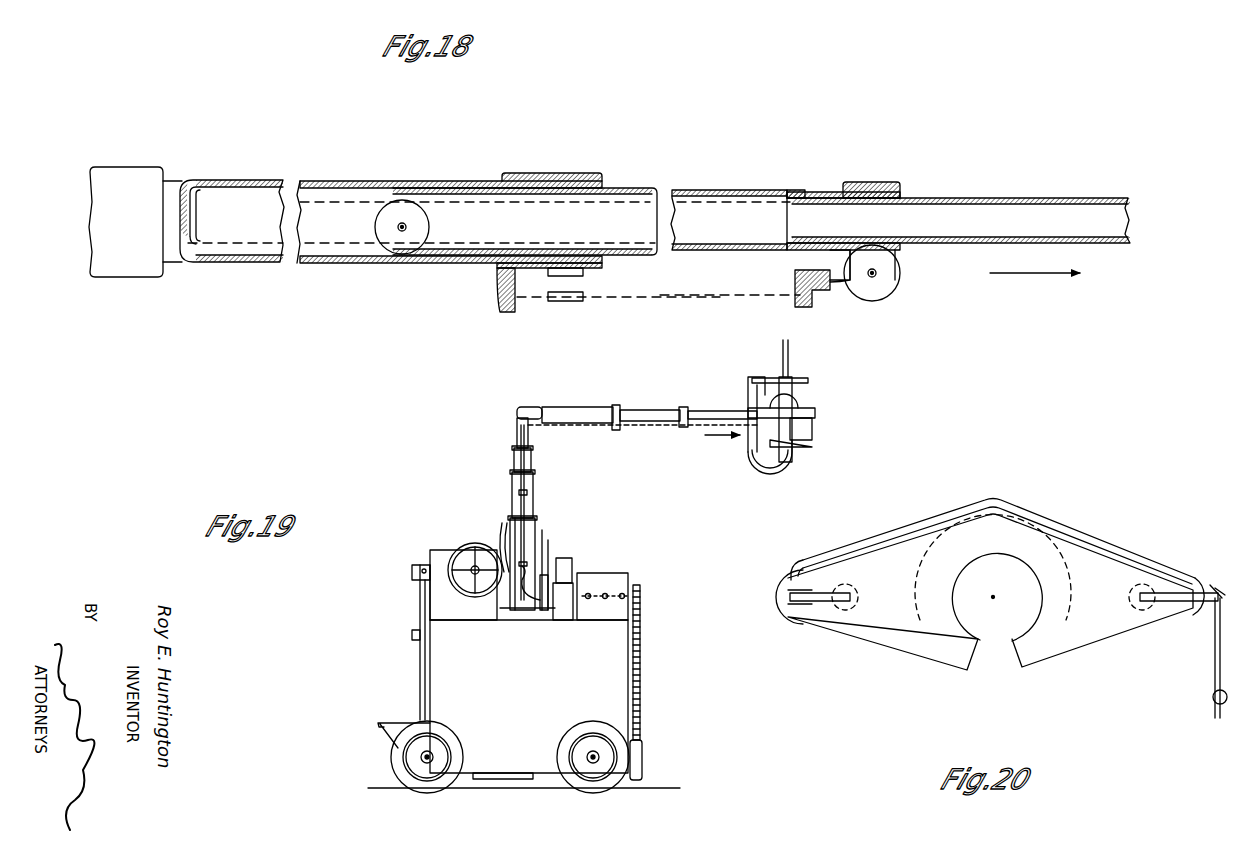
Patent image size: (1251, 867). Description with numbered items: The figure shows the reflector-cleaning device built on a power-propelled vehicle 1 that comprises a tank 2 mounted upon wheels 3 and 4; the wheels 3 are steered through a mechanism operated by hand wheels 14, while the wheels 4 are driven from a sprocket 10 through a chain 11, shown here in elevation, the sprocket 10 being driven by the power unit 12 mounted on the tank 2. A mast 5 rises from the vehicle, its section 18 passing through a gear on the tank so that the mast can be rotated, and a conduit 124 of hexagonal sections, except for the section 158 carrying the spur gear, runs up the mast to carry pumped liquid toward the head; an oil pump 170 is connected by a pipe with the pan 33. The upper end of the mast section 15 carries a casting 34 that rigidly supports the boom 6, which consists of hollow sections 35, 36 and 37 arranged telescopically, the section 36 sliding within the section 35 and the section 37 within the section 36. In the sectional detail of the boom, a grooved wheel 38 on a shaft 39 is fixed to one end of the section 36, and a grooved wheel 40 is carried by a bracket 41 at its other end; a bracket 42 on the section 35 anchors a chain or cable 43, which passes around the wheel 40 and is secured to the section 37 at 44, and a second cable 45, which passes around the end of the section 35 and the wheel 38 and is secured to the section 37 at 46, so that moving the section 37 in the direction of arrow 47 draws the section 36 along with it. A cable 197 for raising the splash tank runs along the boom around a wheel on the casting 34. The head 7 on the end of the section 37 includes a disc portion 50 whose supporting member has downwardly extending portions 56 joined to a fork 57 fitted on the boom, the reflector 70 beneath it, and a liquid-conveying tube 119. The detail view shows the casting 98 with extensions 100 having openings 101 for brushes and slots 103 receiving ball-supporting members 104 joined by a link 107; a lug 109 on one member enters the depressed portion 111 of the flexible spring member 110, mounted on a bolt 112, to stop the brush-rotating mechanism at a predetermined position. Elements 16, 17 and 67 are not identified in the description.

In FIG. 19, the power-propelled vehicle 1 is at (645, 690).
In FIG. 19, the tank 2 is at (630, 652).
In FIG. 19, the wheels 3 is at (392, 760).
In FIG. 19, the wheels 4 is at (625, 760).
In FIG. 19, the mast 5 is at (537, 487).
In FIG. 18, the boom 6 is at (628, 181).
In FIG. 19, the boom 6 is at (662, 408).
In FIG. 19, the head 7 is at (815, 427).
In FIG. 19, the sprocket 10 is at (642, 590).
In FIG. 19, the chain 11 is at (642, 630).
In FIG. 19, the power unit 12 is at (563, 605).
In FIG. 19, the hand wheels 14 is at (448, 583).
In FIG. 19, the mast section 15 is at (516, 433).
In FIG. 19, the intermediate mast section 16 is at (513, 461).
In FIG. 19, the lower mast section 17 is at (511, 497).
In FIG. 19, the mast section 18 is at (512, 548).
In FIG. 19, the pan 33 is at (501, 780).
In FIG. 18, the casting 34 is at (122, 167).
In FIG. 19, the casting 34 is at (517, 412).
In FIG. 18, the boom section 35 is at (345, 181).
In FIG. 19, the boom section 35 is at (573, 407).
In FIG. 18, the boom section 36 is at (730, 190).
In FIG. 19, the boom section 36 is at (640, 410).
In FIG. 18, the boom section 37 is at (1035, 198).
In FIG. 19, the boom section 37 is at (710, 411).
In FIG. 18, the grooved wheel 38 is at (402, 254).
In FIG. 18, the shaft 39 is at (398, 227).
In FIG. 18, the grooved wheel 40 is at (875, 301).
In FIG. 18, the bracket 41 is at (795, 280).
In FIG. 19, the bracket 41 is at (682, 427).
In FIG. 18, the bracket 42 is at (507, 312).
In FIG. 19, the bracket 42 is at (614, 430).
In FIG. 18, the chain or cable 43 is at (633, 300).
In FIG. 18, the connection means 44 is at (800, 240).
In FIG. 18, the second cable or chain 45 is at (603, 200).
In FIG. 18, the connection point 46 is at (790, 205).
In FIG. 18, the arrow 47 is at (1035, 273).
In FIG. 19, the arrow 47 is at (723, 437).
In FIG. 19, the disc portion 50 is at (800, 380).
In FIG. 19, the downwardly extending portions 56 is at (795, 450).
In FIG. 19, the fork 57 is at (800, 413).
In FIG. 19, the vertical rod 67 is at (780, 357).
In FIG. 19, the reflector 70 is at (790, 404).
In FIG. 20, the casting 98 is at (1092, 610).
In FIG. 20, the extensions 100 is at (1120, 578).
In FIG. 19, the openings 101 is at (606, 576).
In FIG. 20, the slots 103 is at (808, 603).
In FIG. 20, the ball-supporting members 104 is at (1170, 605).
In FIG. 20, the link 107 is at (950, 503).
In FIG. 20, the lug 109 is at (1218, 588).
In FIG. 20, the flexible spring member 110 is at (1214, 670).
In FIG. 20, the depressed portion 111 is at (1225, 602).
In FIG. 20, the bolt 112 is at (1212, 700).
In FIG. 19, the second liquid-conveying tube 119 is at (770, 466).
In FIG. 19, the propelling conduit 124 is at (528, 525).
In FIG. 19, the conduit section 158 is at (528, 576).
In FIG. 19, the oil pump 170 is at (475, 598).
In FIG. 18, the cable or rope 197 is at (240, 250).